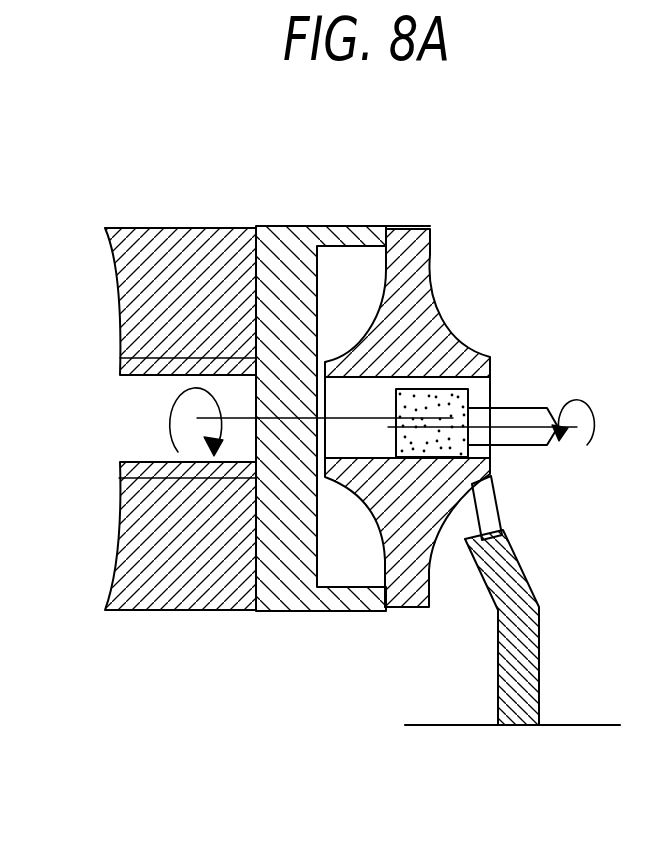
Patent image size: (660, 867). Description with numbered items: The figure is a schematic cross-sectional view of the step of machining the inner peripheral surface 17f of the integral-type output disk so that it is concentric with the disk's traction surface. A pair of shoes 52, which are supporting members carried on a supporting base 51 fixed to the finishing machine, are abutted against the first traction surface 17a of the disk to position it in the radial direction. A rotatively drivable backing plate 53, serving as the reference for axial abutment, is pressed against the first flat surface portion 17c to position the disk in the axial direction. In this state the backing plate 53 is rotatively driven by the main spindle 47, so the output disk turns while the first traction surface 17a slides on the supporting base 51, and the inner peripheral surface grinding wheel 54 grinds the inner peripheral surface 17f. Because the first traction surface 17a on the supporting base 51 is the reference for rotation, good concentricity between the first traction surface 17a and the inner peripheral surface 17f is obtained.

The main spindle 47 is at (157, 263).
The backing plate 53 is at (283, 263).
The inner peripheral surface 17f is at (358, 378).
The first traction surface 17a is at (430, 568).
The first flat surface portion 17c is at (390, 583).
The inner peripheral surface grinding wheel 54 is at (452, 440).
The shoe 52 is at (484, 510).
The supporting base 51 is at (520, 683).